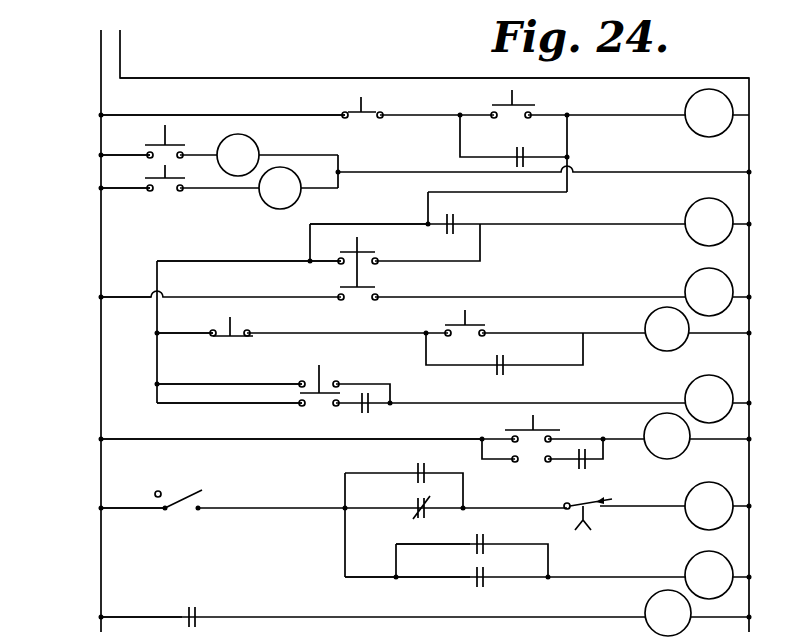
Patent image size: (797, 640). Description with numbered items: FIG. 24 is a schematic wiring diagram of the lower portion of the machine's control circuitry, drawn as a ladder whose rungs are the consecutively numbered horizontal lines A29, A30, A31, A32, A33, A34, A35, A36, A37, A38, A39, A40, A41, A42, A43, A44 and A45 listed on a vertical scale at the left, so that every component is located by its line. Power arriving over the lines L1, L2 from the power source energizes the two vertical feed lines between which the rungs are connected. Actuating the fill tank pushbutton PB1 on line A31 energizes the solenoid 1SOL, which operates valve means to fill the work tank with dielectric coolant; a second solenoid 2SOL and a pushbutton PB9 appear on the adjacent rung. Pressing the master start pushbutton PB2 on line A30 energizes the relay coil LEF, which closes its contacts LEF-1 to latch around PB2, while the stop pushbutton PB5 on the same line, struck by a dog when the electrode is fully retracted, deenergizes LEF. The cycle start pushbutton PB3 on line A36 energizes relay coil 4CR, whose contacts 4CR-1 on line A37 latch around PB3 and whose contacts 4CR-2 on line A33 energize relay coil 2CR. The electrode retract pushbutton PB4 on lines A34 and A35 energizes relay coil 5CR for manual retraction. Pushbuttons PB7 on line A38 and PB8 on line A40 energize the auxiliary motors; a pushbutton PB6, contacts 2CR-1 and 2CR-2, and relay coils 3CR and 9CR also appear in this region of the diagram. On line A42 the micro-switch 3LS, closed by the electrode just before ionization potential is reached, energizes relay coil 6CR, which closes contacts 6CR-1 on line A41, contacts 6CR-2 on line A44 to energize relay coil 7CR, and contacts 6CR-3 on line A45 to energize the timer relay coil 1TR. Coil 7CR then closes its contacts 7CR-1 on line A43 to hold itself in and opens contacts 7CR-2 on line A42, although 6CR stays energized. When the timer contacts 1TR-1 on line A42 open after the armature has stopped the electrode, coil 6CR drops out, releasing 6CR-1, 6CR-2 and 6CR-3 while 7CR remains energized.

The power line L1 is at (101, 45).
The power line L2 is at (121, 48).
The horizontal numbered line A29 is at (85, 78).
The horizontal numbered line A30 is at (85, 115).
The horizontal numbered line A31 is at (85, 155).
The horizontal numbered line A32 is at (85, 188).
The horizontal numbered line A33 is at (85, 224).
The horizontal numbered line A34 is at (85, 261).
The horizontal numbered line A35 is at (85, 297).
The horizontal numbered line A36 is at (85, 333).
The horizontal numbered line A37 is at (85, 368).
The horizontal numbered line A38 is at (85, 384).
The horizontal numbered line A39 is at (85, 403).
The horizontal numbered line A40 is at (85, 439).
The horizontal numbered line A41 is at (85, 477).
The horizontal numbered line A42 is at (85, 508).
The horizontal numbered line A43 is at (85, 545).
The horizontal numbered line A44 is at (85, 581).
The horizontal numbered line A45 is at (85, 617).
The fill tank pushbutton PB1 is at (163, 137).
The push button PB9 is at (162, 178).
The solenoid 1SOL is at (238, 155).
The solenoid 2SOL is at (280, 188).
The stop pushbutton PB5 is at (368, 117).
The master start pushbutton PB2 is at (515, 103).
The relay coil LEF is at (709, 113).
The contacts LEF-1 is at (492, 160).
The contacts 4CR-2 is at (478, 221).
The electrode retract pushbutton PB4 is at (365, 251).
The relay coil 2CR is at (709, 222).
The relay coil 5CR is at (709, 292).
The push button PB6 is at (233, 322).
The cycle start pushbutton PB3 is at (460, 322).
The relay coil 4CR is at (667, 329).
The contacts 4CR-1 is at (529, 371).
The pushbutton PB7 is at (315, 383).
The relay contact 2CR-1 is at (392, 408).
The control relay 3CR is at (709, 399).
The pushbutton PB8 is at (510, 426).
The relay contact 2CR-2 is at (608, 463).
The control relay 9CR is at (667, 436).
The micro-switch 3LS is at (178, 491).
The contacts 6CR-1 is at (386, 470).
The contacts 7CR-2 is at (447, 513).
The timer relay contacts 1TR-1 is at (597, 511).
The relay coil 6CR is at (709, 506).
The contacts 7CR-1 is at (507, 541).
The contacts 6CR-2 is at (507, 582).
The relay coil 7CR is at (709, 575).
The contacts 6CR-3 is at (221, 612).
The timer relay coil 1TR is at (668, 613).